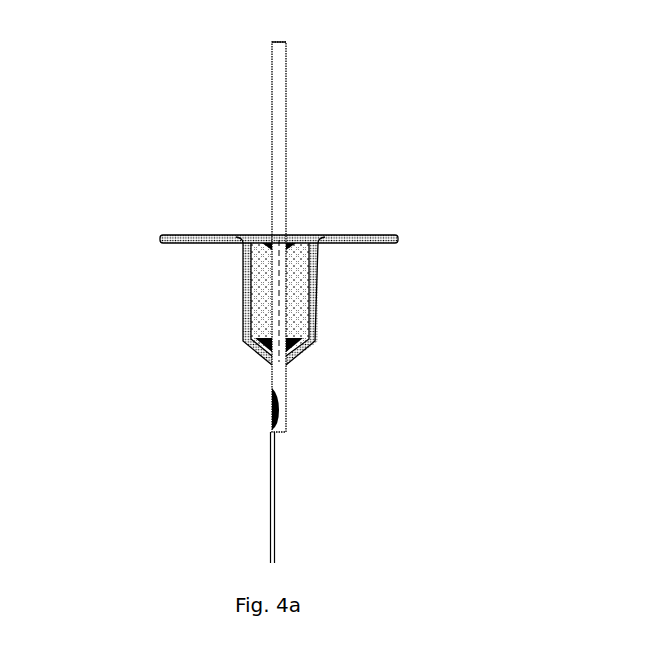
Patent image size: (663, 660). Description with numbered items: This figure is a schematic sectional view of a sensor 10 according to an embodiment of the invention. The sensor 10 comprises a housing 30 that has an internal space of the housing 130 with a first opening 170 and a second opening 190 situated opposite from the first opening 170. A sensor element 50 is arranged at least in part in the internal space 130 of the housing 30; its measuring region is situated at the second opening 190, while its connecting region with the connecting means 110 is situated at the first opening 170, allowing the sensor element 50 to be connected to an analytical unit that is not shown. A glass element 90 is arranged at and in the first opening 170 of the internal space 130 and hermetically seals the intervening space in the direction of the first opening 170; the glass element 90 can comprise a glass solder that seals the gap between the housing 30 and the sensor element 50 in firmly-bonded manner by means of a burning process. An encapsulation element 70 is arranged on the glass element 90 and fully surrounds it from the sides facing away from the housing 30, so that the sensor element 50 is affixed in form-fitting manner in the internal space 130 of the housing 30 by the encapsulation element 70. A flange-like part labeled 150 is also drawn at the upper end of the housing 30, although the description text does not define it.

The sensor 10 is at (327, 59).
The sensor element 50 is at (297, 158).
The flange 150 is at (353, 227).
The second opening 190 is at (258, 223).
The encapsulation element 70 is at (260, 303).
The glass element 90 is at (263, 342).
The housing 30 is at (327, 318).
The internal space of the housing 130 is at (297, 327).
The first opening 170 is at (307, 368).
The connecting means 110 is at (245, 503).